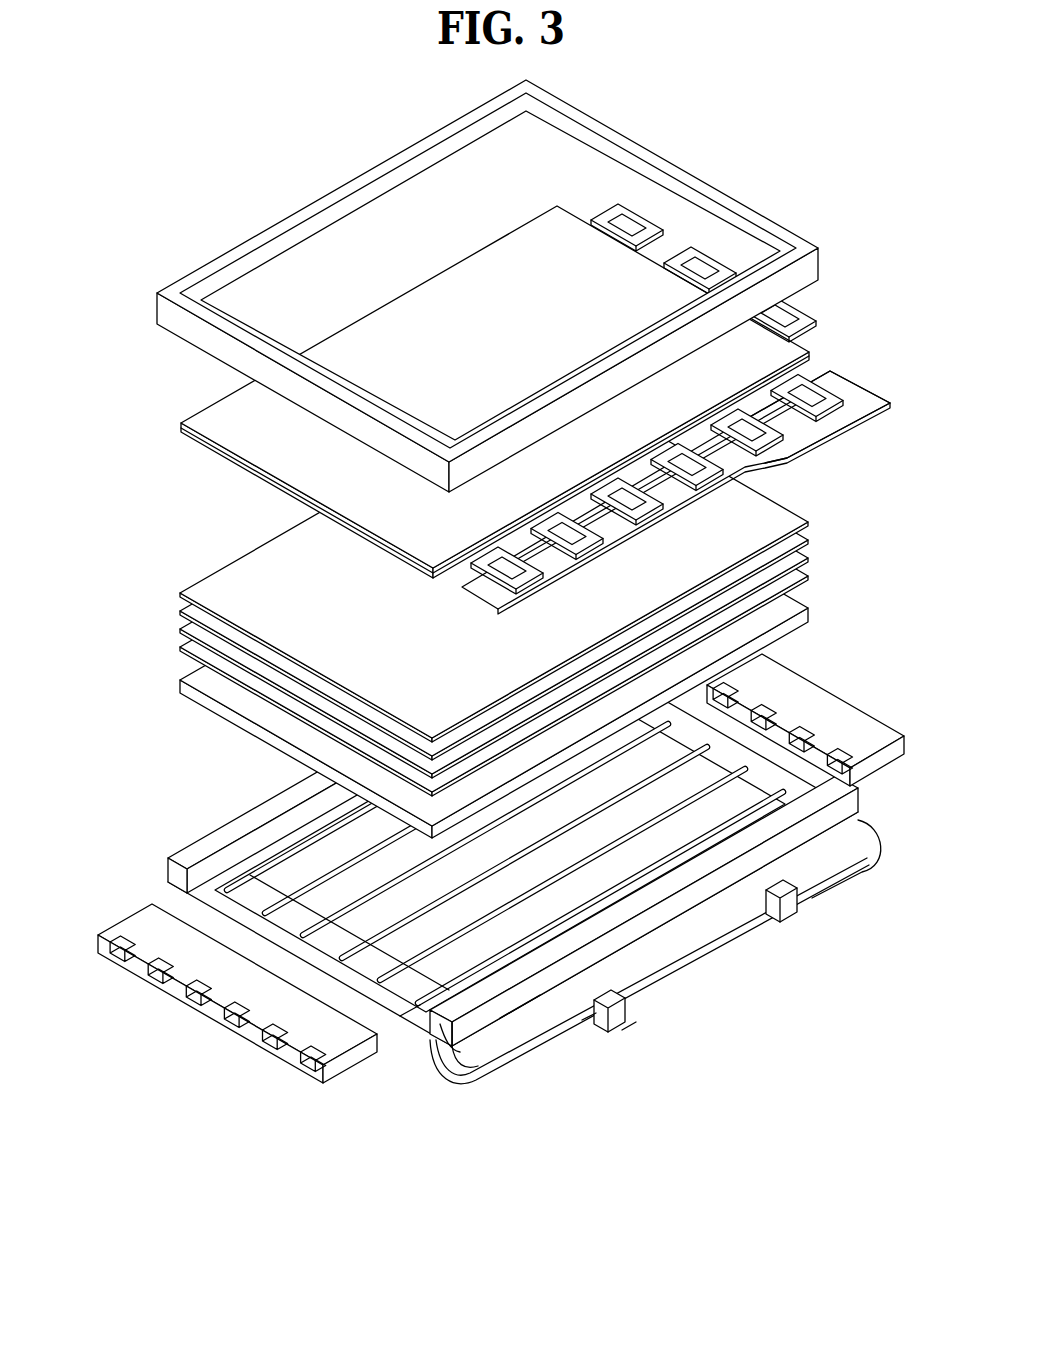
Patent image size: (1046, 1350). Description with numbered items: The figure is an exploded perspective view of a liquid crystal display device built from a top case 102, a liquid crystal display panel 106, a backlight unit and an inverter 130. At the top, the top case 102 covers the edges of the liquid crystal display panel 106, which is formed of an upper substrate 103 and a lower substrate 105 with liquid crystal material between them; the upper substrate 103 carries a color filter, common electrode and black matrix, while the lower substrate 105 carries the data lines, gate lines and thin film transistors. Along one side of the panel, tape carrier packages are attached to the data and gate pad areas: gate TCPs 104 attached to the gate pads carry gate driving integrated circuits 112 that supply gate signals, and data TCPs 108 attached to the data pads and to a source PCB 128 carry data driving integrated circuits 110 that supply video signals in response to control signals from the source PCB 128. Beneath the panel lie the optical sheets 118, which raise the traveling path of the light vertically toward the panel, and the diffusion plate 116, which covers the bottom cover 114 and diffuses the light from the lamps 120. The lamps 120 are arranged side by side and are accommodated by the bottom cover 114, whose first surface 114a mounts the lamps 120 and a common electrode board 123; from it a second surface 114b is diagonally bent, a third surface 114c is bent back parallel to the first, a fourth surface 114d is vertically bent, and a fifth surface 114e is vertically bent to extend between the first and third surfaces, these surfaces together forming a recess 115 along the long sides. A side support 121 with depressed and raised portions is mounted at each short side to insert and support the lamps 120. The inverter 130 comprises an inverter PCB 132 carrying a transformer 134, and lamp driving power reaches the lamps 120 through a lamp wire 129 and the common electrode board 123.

The top case 102 is at (760, 217).
The upper substrate 103 is at (181, 423).
The gate tape carrier package 104 is at (637, 227).
The lower substrate 105 is at (178, 432).
The liquid crystal display panel 106 is at (437, 392).
The data tape carrier package 108 is at (832, 395).
The data driving integrated circuit 110 is at (813, 390).
The gate driving integrated circuit 112 is at (603, 220).
The bottom cover 114 is at (459, 901).
The first surface 114a is at (407, 1017).
The second surface 114b is at (450, 1027).
The third surface 114c is at (460, 1027).
The fourth surface 114d is at (556, 1063).
The fifth surface 114e is at (467, 1060).
The recess 115 is at (158, 888).
The diffusion plate 116 is at (808, 613).
The optical sheets 118 is at (814, 523).
The lamps 120 is at (303, 855).
The side support 121 is at (203, 1017).
The common electrode board 123 is at (237, 878).
The source PCB 128 is at (867, 400).
The lamp wire 129 is at (843, 877).
The inverter 130 is at (671, 952).
The inverter PCB 132 is at (713, 967).
The transformer 134 is at (613, 1013).